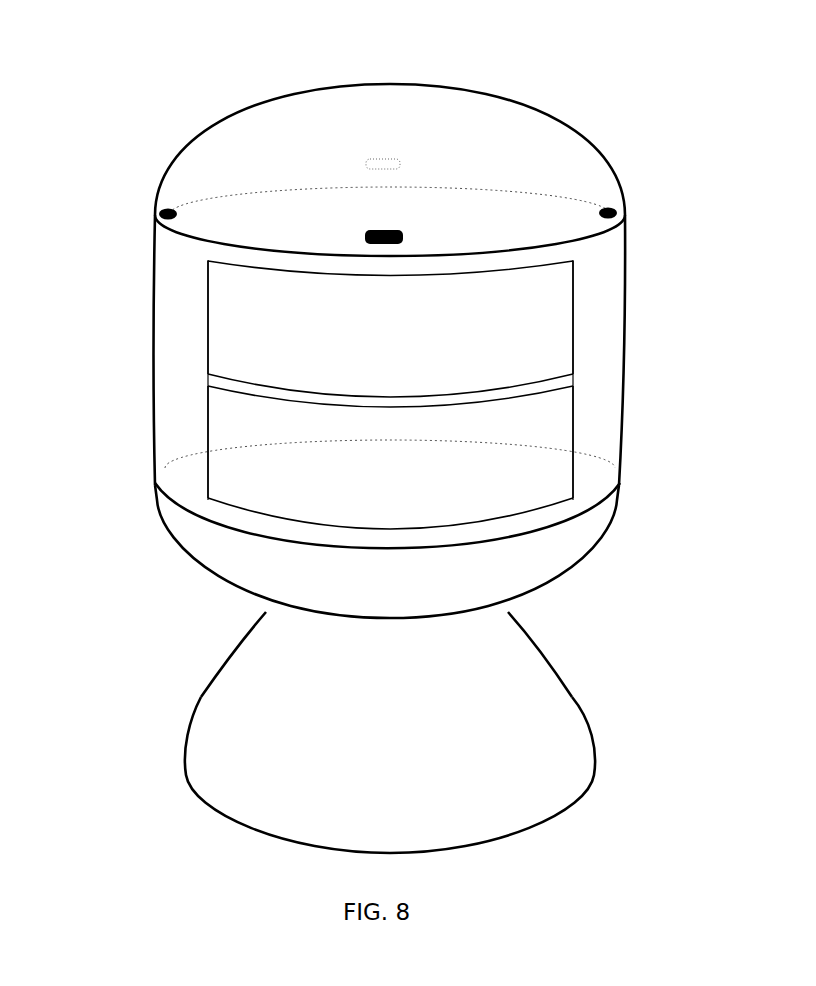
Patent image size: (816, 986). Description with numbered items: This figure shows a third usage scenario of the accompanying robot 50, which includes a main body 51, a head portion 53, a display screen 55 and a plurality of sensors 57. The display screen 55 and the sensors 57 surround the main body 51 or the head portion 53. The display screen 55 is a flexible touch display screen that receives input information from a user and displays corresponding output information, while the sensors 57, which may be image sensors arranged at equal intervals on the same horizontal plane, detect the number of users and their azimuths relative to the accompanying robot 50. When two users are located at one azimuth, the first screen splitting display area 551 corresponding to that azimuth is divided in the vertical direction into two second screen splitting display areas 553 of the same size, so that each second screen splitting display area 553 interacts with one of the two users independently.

The accompanying robot 50 is at (390, 46).
The main body 51 is at (233, 725).
The head portion 53 is at (185, 545).
The display screen 55 is at (572, 530).
The sensors 57 is at (170, 208).
The first screen splitting display area 551 is at (590, 364).
The second screen splitting display areas 553 is at (207, 312).